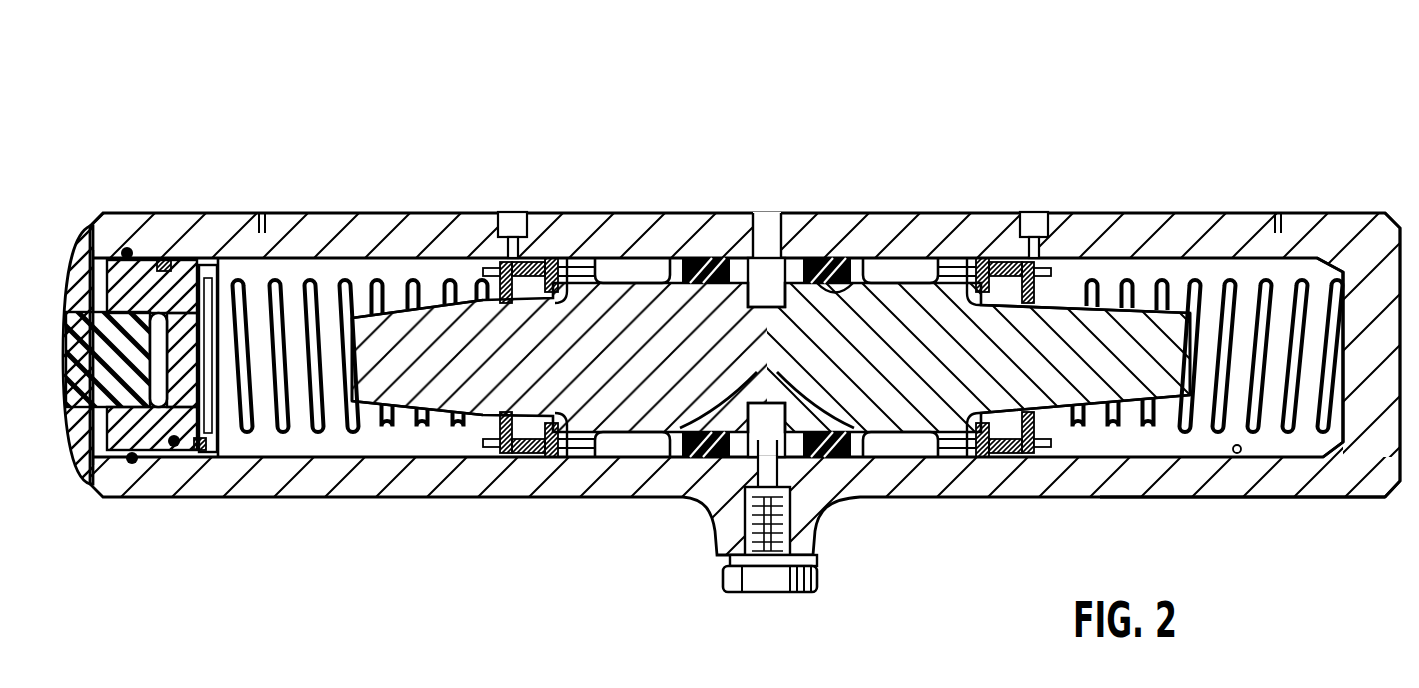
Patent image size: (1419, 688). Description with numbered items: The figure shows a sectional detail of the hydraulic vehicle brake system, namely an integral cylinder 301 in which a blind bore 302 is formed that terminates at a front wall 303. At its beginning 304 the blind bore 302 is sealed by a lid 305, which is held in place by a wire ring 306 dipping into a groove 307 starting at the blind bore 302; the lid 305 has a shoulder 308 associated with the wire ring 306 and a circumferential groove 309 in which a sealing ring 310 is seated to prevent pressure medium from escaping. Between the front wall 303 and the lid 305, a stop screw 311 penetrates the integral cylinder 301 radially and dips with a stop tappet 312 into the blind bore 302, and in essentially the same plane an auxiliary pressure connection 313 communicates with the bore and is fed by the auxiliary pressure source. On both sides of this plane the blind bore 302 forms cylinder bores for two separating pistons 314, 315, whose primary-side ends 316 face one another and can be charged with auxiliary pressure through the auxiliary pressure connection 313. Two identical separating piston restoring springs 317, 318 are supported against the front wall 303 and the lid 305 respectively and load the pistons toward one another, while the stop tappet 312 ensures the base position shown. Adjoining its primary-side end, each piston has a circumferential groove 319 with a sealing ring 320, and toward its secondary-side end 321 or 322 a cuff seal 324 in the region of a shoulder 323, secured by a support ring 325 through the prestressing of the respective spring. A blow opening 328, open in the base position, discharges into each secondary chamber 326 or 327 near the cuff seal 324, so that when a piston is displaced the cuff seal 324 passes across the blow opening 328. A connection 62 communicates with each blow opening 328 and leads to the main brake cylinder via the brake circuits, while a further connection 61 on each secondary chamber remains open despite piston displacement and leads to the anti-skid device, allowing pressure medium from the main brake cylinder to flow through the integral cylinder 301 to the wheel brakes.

The integral cylinder 301 is at (940, 178).
The blind bore 302 is at (1240, 453).
The front wall 303 is at (1379, 350).
The beginning of the blind bore 304 is at (146, 180).
The lid 305 is at (117, 280).
The wire ring 306 is at (185, 458).
The groove 307 is at (160, 470).
The shoulder 308 is at (127, 466).
The groove 309 is at (225, 457).
The sealing ring 310 is at (208, 452).
The stop screw 311 is at (775, 586).
The stop tappet 312 is at (790, 500).
The auxiliary pressure connection 313 is at (764, 235).
The separating piston 314 is at (893, 305).
The separating piston 315 is at (625, 320).
The primary-side end 316 is at (663, 457).
The separating piston restoring spring 317 is at (1187, 432).
The separating piston restoring spring 318 is at (320, 432).
The circumferential groove 319 is at (887, 305).
The sealing ring 320 is at (830, 300).
The secondary-side end 321 is at (1190, 300).
The secondary-side end 322 is at (395, 330).
The shoulder 323 is at (980, 262).
The cuff seal 324 is at (995, 265).
The support ring 325 is at (1035, 457).
The secondary chamber 326 is at (1312, 415).
The secondary chamber 327 is at (297, 317).
The blow opening 328 is at (512, 238).
The connection 61 is at (261, 232).
The connection 62 is at (514, 258).